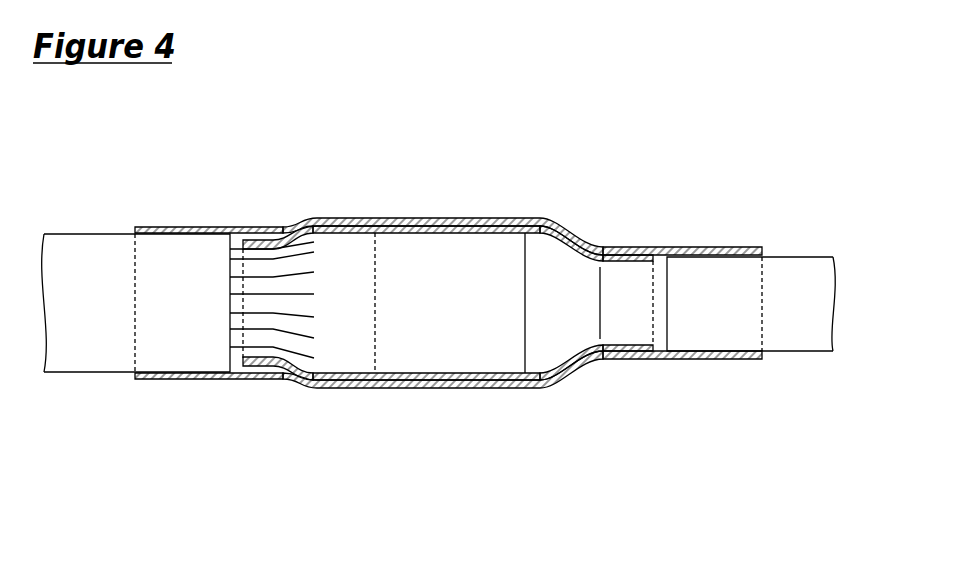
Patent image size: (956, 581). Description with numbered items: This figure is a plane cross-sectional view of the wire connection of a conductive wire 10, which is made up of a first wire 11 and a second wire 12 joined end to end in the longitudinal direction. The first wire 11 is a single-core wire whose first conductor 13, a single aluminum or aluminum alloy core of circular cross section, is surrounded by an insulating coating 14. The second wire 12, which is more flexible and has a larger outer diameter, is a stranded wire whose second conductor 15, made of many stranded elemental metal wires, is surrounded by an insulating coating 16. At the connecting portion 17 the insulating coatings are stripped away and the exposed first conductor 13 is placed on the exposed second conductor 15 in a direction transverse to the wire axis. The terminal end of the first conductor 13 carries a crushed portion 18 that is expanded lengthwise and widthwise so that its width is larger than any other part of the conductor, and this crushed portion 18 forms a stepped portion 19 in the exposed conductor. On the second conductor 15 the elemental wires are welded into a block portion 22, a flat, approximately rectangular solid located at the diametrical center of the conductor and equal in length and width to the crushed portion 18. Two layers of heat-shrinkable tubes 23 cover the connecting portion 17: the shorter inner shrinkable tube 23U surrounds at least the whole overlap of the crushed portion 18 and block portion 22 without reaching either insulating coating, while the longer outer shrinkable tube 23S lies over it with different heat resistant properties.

The conductive wire 10 is at (483, 188).
The first wire 11 is at (751, 252).
The second wire 12 is at (136, 258).
The first conductor 13 is at (628, 249).
The insulating coating 14 is at (682, 219).
The second conductor 15 is at (272, 247).
The insulating coating 16 is at (209, 256).
The connecting portion 17 is at (443, 263).
The crushed portion 18 is at (426, 345).
The stepped portion 19 is at (571, 345).
The block portion 22 is at (391, 344).
The shrinkable tubes 23 is at (657, 391).
The inner shrinkable tube 23U is at (629, 406).
The outer shrinkable tube 23S is at (682, 409).